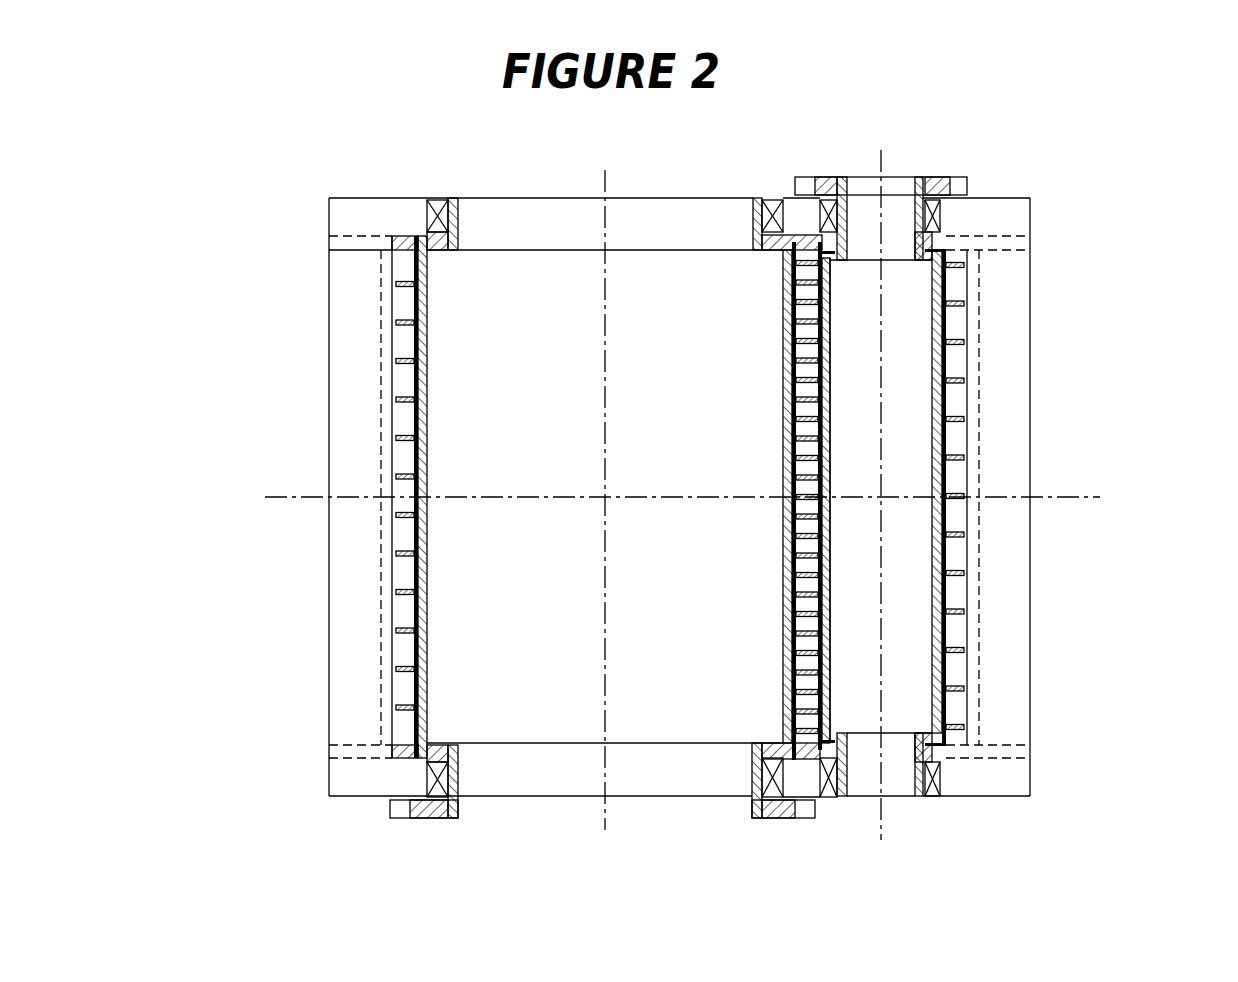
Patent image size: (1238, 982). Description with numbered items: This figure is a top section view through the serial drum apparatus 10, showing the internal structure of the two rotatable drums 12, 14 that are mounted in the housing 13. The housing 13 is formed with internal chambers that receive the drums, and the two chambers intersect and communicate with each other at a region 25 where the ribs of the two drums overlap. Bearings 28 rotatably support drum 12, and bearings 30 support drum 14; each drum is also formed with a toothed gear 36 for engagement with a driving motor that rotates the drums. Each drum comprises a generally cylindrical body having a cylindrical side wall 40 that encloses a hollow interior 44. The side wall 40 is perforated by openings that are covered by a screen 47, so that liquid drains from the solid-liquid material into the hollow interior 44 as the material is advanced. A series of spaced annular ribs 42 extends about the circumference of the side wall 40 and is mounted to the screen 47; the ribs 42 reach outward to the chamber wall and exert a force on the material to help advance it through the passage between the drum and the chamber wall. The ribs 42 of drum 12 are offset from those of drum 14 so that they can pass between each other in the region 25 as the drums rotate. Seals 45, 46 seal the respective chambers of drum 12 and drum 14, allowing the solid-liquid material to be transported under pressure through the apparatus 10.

The serial drum apparatus 10 is at (312, 716).
The drum 12 is at (486, 700).
The housing 13 is at (360, 557).
The drum 14 is at (912, 718).
The region 25 is at (792, 313).
The bearings 28 is at (430, 212).
The bearings 30 is at (942, 207).
The toothed gear 36 is at (940, 188).
The cylindrical side wall 40 is at (787, 557).
The annular ribs 42 is at (394, 285).
The hollow interior 44 is at (556, 405).
The seal 45 is at (392, 243).
The seal 46 is at (913, 245).
The screen 47 is at (412, 405).